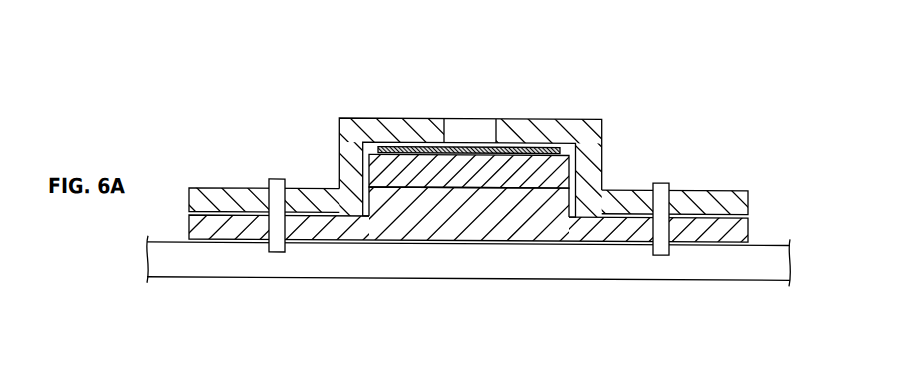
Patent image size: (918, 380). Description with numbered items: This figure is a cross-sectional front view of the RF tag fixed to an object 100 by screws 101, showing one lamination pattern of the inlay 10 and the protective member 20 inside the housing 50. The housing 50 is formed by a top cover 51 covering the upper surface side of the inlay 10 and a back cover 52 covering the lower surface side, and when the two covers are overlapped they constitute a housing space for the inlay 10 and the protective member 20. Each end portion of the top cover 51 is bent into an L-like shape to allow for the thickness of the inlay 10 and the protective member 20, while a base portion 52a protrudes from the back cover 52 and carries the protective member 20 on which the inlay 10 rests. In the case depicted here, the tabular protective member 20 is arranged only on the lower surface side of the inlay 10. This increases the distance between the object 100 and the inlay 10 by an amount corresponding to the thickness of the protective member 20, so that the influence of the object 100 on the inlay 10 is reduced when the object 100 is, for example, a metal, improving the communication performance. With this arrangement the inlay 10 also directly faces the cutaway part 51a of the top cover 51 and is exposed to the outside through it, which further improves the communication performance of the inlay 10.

The inlay 10 is at (527, 150).
The protective member 20 is at (590, 163).
The housing 50 is at (481, 202).
The top cover 51 is at (750, 195).
The cutaway part 51a is at (468, 128).
The back cover 52 is at (520, 203).
The base portion 52a is at (467, 198).
The object 100 is at (735, 260).
The screw 101 is at (277, 180).